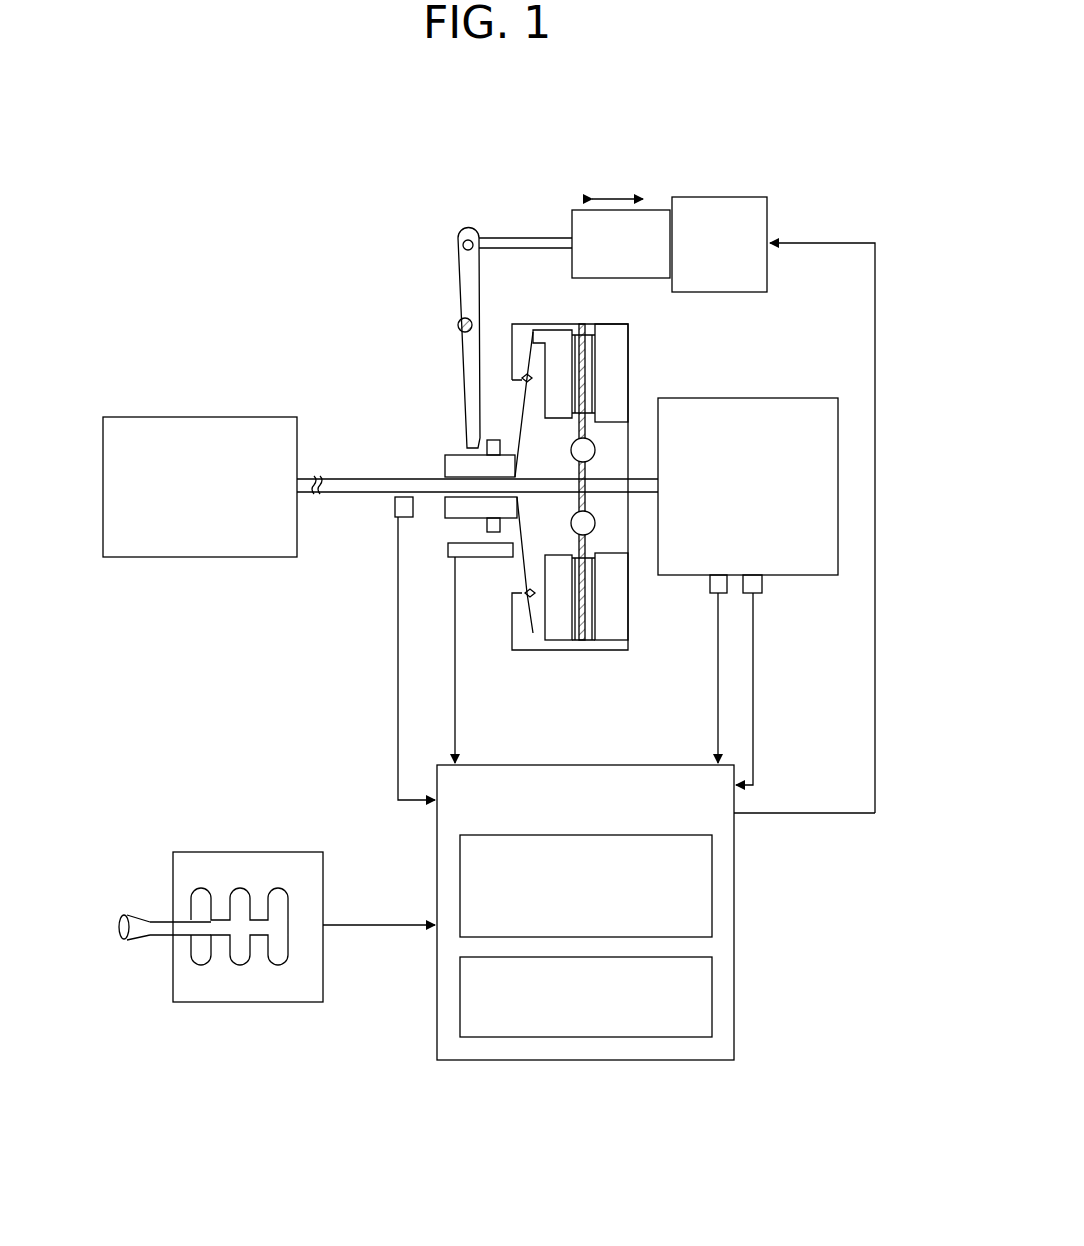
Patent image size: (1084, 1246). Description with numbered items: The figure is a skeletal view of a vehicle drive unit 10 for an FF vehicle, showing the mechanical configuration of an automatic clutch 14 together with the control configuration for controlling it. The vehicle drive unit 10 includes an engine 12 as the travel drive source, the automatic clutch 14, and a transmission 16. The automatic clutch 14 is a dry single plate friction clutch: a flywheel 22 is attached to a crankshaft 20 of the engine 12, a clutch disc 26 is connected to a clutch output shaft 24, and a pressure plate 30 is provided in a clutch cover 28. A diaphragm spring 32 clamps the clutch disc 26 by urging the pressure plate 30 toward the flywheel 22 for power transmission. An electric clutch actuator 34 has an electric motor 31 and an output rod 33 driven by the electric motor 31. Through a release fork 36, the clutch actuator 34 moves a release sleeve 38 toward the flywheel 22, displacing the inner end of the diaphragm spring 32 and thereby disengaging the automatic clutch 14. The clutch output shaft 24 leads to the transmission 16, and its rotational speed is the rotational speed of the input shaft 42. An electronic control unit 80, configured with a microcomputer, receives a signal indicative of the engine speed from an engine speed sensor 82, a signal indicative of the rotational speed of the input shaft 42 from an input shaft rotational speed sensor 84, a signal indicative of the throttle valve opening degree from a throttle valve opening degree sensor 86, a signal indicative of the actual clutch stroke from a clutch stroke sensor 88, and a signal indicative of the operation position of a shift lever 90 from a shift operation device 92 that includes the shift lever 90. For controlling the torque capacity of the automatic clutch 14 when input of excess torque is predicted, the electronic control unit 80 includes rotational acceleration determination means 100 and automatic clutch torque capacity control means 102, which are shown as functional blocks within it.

The vehicle drive unit 10 is at (275, 183).
The engine 12 is at (737, 410).
The automatic clutch 14 is at (645, 345).
The transmission 16 is at (183, 540).
The crankshaft 20 is at (645, 500).
The flywheel 22 is at (615, 390).
The clutch output shaft 24 is at (385, 490).
The clutch disc 26 is at (588, 626).
The clutch cover 28 is at (555, 323).
The pressure plate 30 is at (557, 628).
The electric motor 31 is at (688, 275).
The diaphragm spring 32 is at (520, 570).
The output rod 33 is at (503, 228).
The electric clutch actuator 34 is at (568, 214).
The release fork 36 is at (465, 293).
The release sleeve 38 is at (458, 463).
The input shaft 42 is at (315, 475).
The electronic control unit 80 is at (563, 772).
The engine speed sensor 82 is at (712, 590).
The input shaft rotational speed sensor 84 is at (397, 512).
The throttle valve opening degree sensor 86 is at (757, 583).
The clutch stroke sensor 88 is at (450, 548).
The shift lever 90 is at (143, 920).
The shift operation device 92 is at (297, 858).
The rotational acceleration determination means 100 is at (712, 890).
The automatic clutch torque capacity control means 102 is at (712, 1000).